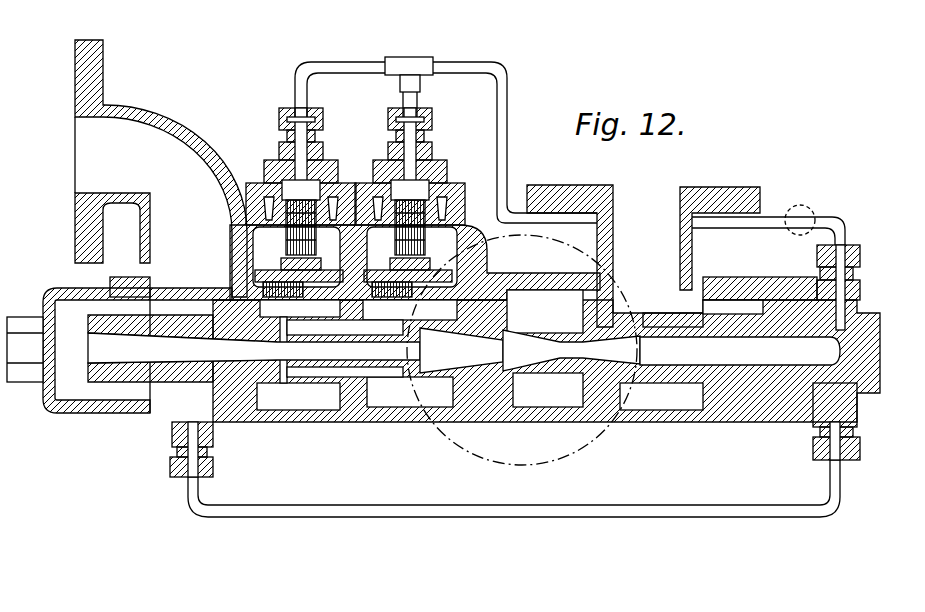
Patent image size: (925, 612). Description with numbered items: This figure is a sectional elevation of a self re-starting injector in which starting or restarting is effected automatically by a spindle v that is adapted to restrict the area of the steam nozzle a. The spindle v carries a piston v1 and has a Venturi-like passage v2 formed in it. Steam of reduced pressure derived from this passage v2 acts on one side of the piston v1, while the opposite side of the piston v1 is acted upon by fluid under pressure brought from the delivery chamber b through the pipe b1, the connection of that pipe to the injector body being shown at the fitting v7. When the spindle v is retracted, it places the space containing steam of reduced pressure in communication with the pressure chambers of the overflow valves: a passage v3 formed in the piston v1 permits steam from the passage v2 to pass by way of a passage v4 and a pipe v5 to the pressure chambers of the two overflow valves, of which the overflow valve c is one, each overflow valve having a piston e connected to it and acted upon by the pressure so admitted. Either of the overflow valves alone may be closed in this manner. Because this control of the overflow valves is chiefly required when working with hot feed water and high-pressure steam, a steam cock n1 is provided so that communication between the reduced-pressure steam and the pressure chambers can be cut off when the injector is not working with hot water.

The steam nozzle a is at (443, 257).
The piston connected to the overflow valve e is at (312, 238).
The overflow valve c is at (295, 351).
The delivery chamber b is at (191, 430).
The pipe b1 is at (452, 505).
The pipe v5 is at (510, 100).
The passage v3 is at (703, 312).
The spindle v is at (656, 334).
The piston v1 is at (716, 300).
The Venturi-like passage v2 is at (666, 372).
The passage v4 is at (758, 290).
The fitting v7 is at (745, 421).
The steam cock n1 is at (799, 235).